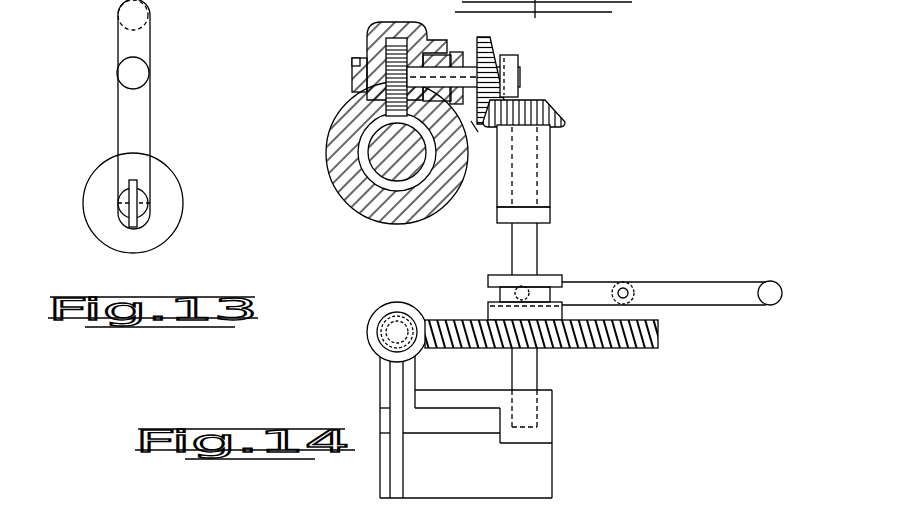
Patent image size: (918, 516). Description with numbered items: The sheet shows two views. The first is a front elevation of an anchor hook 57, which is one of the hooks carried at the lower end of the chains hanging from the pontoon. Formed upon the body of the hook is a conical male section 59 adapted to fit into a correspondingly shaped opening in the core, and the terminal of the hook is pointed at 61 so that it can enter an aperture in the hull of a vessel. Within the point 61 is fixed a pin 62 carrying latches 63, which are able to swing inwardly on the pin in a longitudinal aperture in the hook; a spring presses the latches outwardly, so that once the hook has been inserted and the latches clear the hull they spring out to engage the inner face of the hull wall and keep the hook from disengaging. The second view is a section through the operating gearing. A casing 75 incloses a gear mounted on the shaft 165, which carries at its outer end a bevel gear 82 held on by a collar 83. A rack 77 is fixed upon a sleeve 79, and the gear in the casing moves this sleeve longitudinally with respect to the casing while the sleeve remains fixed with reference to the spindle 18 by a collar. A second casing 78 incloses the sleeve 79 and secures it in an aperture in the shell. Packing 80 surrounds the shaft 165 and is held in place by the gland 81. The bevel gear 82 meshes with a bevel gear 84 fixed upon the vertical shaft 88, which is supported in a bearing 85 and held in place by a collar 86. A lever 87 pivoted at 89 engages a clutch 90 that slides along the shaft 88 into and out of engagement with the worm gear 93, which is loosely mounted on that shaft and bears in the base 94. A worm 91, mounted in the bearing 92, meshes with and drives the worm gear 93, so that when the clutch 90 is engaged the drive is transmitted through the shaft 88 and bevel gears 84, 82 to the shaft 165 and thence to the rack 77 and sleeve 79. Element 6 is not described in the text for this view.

In FIG. 13, the anchor hook 57 is at (142, 108).
In FIG. 13, the conical male section 59 is at (172, 192).
In FIG. 13, the point 61 is at (148, 210).
In FIG. 13, the pin 62 is at (120, 205).
In FIG. 13, the latches 63 is at (137, 182).
In FIG. 14, the shaft 6 is at (385, 53).
In FIG. 14, the spindle 18 is at (368, 197).
In FIG. 14, the casing 75 is at (377, 32).
In FIG. 14, the rack 77 is at (387, 110).
In FIG. 14, the casing 78 is at (340, 117).
In FIG. 14, the sleeve 79 is at (368, 173).
In FIG. 14, the packing 80 is at (445, 57).
In FIG. 14, the gland 81 is at (462, 52).
In FIG. 14, the bevel gear 82 is at (500, 52).
In FIG. 14, the collar 83 is at (510, 62).
In FIG. 14, the bevel gear 84 is at (553, 108).
In FIG. 14, the shaft 165 is at (485, 133).
In FIG. 14, the bearing 85 is at (543, 168).
In FIG. 14, the collar 86 is at (543, 217).
In FIG. 14, the lever 87 is at (768, 295).
In FIG. 14, the vertical shaft 88 is at (527, 253).
In FIG. 14, the pivot 89 is at (624, 293).
In FIG. 14, the clutch 90 is at (495, 280).
In FIG. 14, the worm 91 is at (380, 333).
In FIG. 14, the bearing 92 is at (397, 358).
In FIG. 14, the worm gear 93 is at (636, 350).
In FIG. 14, the base 94 is at (546, 418).